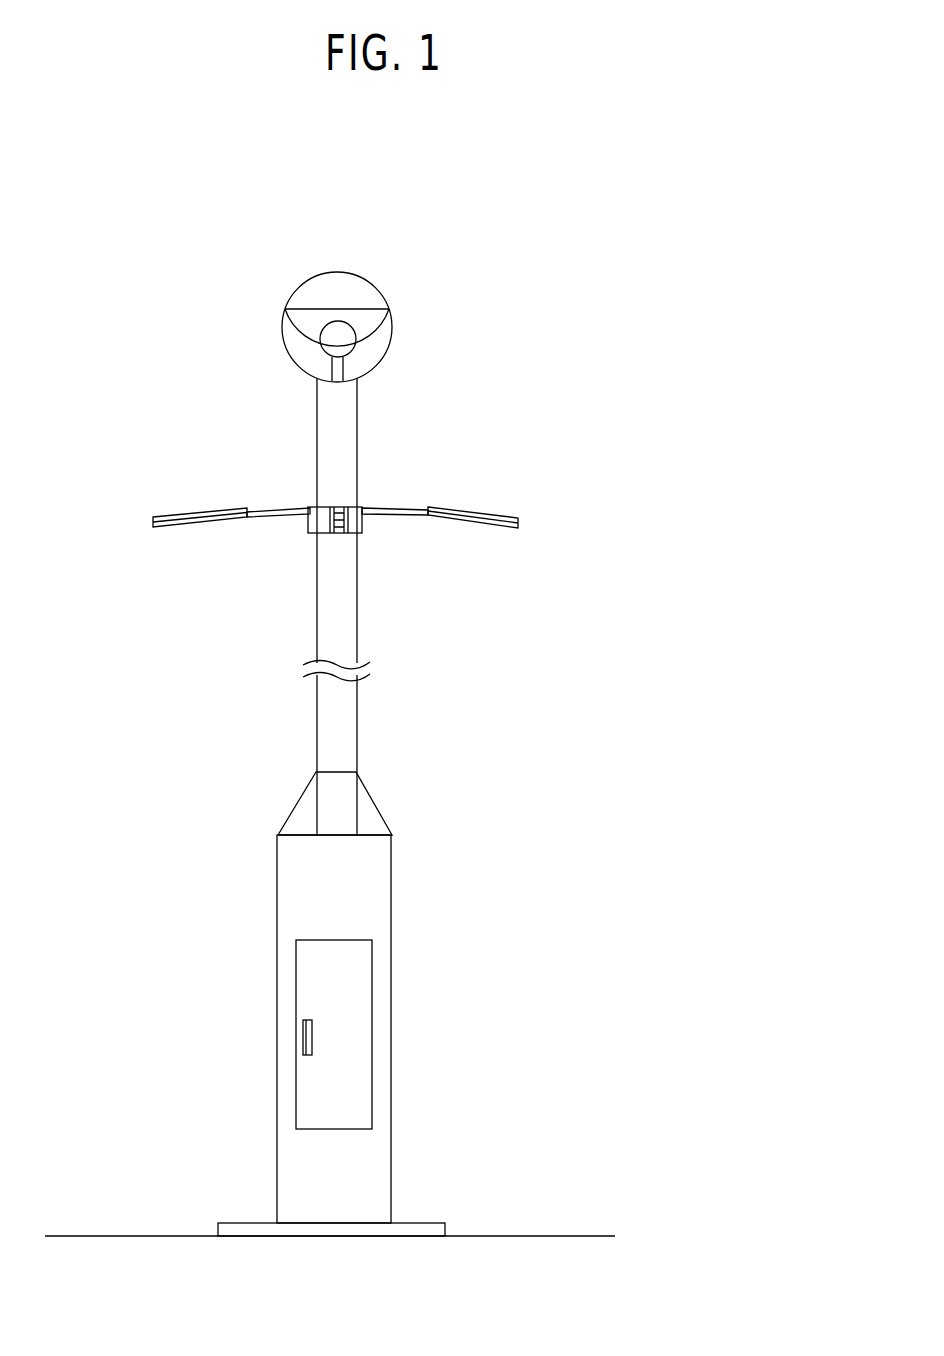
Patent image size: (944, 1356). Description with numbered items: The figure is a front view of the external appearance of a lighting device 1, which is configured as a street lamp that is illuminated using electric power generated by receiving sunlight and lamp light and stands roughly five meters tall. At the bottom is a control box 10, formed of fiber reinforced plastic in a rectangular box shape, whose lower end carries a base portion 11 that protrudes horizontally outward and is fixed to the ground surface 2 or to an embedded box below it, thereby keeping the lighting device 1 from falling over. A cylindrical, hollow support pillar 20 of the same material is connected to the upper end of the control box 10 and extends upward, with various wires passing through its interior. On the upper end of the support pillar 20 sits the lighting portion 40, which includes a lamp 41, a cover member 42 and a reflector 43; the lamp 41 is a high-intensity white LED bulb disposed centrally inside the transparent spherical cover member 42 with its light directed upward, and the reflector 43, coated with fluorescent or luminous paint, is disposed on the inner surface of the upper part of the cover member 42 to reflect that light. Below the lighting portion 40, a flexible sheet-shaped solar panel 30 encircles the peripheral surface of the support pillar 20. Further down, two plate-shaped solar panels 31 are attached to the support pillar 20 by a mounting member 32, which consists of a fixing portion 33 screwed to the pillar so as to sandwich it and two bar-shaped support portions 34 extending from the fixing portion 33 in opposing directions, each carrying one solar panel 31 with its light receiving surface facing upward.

The lighting device 1 is at (515, 222).
The ground surface 2 is at (530, 1235).
The control box 10 is at (385, 1015).
The base portion 11 is at (417, 1222).
The support pillar 20 is at (342, 727).
The solar panel 30 is at (347, 432).
The solar panel 31 is at (185, 511).
The mounting member 32 is at (378, 497).
The fixing portion 33 is at (320, 526).
The support portion 34 is at (285, 520).
The lighting portion 40 is at (275, 280).
The lamp 41 is at (346, 339).
The cover member 42 is at (302, 339).
The reflector 43 is at (350, 285).